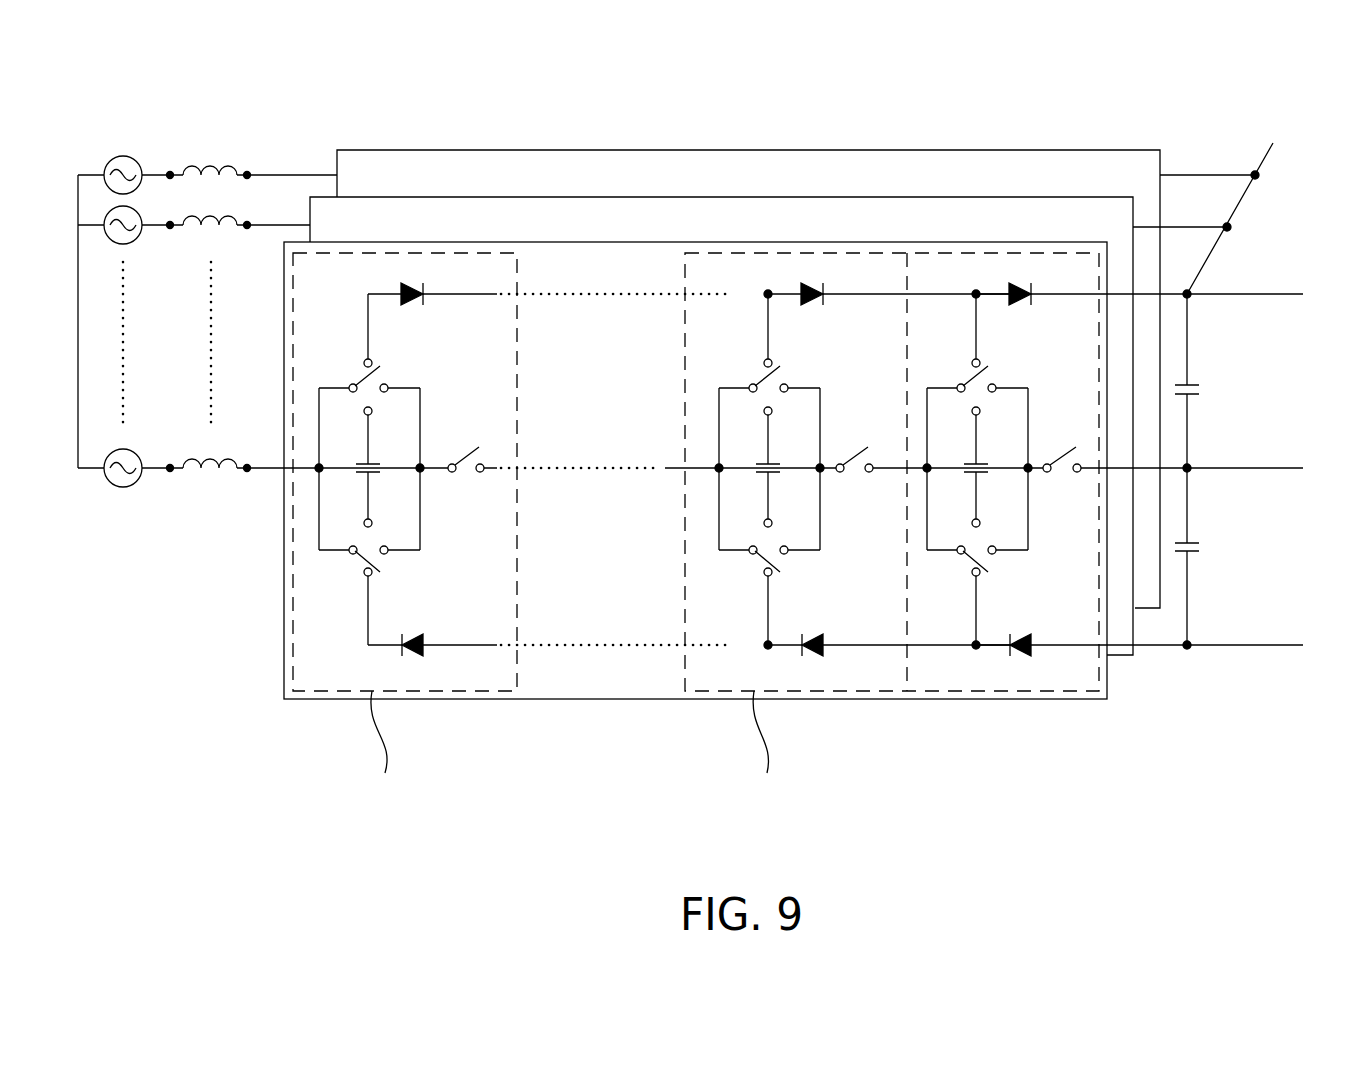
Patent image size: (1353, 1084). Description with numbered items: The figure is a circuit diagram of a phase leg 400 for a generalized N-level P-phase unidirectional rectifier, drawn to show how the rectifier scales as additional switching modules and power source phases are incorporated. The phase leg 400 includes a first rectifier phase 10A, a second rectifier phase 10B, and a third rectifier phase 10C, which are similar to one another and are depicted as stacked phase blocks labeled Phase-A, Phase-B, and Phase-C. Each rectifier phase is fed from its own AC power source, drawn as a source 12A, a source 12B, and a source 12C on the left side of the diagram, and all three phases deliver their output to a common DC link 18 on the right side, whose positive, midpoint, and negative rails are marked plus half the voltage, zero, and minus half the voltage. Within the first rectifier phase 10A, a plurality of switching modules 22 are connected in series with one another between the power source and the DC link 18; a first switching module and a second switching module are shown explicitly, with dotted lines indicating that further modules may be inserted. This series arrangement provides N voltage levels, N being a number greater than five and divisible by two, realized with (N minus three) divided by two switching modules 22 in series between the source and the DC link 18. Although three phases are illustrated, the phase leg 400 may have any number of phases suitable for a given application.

The phase leg 400 is at (705, 475).
The first rectifier phase 10A is at (793, 558).
The second rectifier phase 10B is at (634, 212).
The third rectifier phase 10C is at (905, 165).
The power source 12A is at (128, 487).
The power source 12B is at (136, 243).
The power source 12C is at (137, 160).
The DC link 18 is at (1292, 355).
The switching module 22 is at (1083, 775).